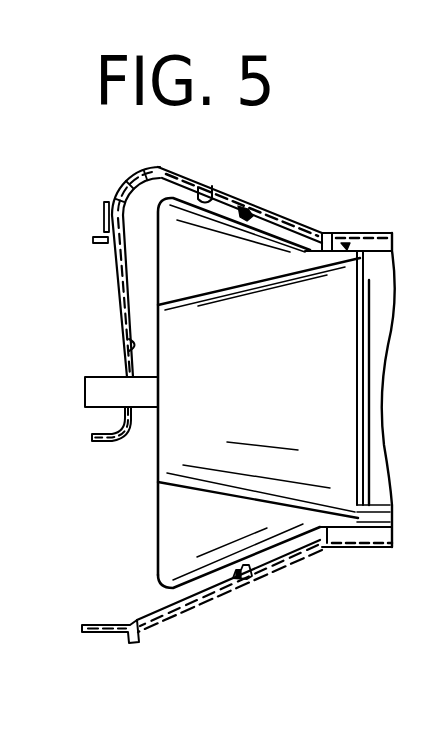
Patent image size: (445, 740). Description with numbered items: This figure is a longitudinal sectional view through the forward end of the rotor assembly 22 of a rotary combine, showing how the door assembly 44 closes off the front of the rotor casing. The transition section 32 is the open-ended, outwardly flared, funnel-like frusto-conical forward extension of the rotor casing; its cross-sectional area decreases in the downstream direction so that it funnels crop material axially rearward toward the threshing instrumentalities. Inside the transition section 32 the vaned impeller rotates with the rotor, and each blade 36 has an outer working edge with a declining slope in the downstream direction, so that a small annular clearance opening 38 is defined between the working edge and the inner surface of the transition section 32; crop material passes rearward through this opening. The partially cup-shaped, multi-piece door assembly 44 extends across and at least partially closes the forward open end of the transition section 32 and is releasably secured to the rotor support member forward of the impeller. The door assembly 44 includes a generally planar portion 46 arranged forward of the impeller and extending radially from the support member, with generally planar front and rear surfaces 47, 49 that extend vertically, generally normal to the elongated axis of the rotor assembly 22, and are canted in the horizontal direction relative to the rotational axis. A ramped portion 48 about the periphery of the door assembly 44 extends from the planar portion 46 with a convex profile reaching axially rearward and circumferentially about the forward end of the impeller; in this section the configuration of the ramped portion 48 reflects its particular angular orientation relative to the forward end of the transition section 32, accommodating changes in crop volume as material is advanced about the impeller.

The rotor assembly 22 is at (335, 249).
The transition section 32 is at (251, 204).
The blade 36 is at (240, 266).
The annular clearance opening 38 is at (205, 186).
The door assembly 44 is at (107, 262).
The planar portion 46 is at (118, 308).
The front surface 47 is at (113, 288).
The ramped portion 48 is at (129, 183).
The rear surface 49 is at (126, 343).